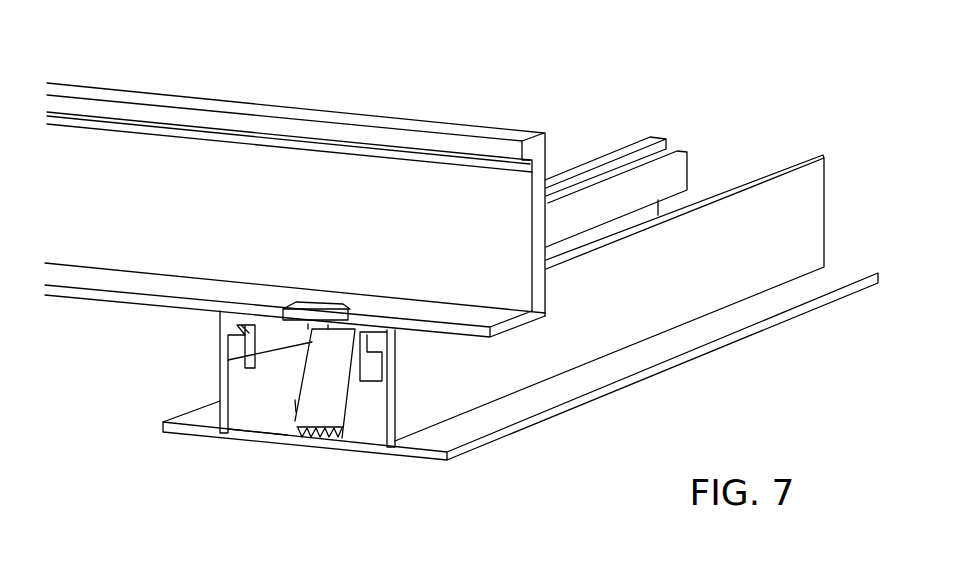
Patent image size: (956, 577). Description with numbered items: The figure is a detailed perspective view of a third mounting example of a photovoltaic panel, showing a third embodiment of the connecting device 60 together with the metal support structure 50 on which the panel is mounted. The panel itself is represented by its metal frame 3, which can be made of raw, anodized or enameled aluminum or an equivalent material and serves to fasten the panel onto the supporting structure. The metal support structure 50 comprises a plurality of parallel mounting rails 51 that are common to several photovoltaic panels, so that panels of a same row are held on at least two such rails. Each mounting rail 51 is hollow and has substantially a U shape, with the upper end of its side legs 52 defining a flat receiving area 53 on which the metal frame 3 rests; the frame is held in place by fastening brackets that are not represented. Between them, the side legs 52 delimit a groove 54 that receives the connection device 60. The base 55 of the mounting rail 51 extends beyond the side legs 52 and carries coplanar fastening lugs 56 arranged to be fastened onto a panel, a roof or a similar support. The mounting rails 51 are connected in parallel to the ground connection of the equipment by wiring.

The metal frame 3 is at (497, 125).
The metal support structure 50 is at (623, 134).
The mounting rail 51 is at (791, 190).
The side legs 52 is at (220, 359).
The flat receiving area 53 is at (222, 318).
The groove 54 is at (280, 421).
The base 55 is at (352, 450).
The fastening lugs 56 is at (185, 412).
The connection device 60 is at (293, 388).